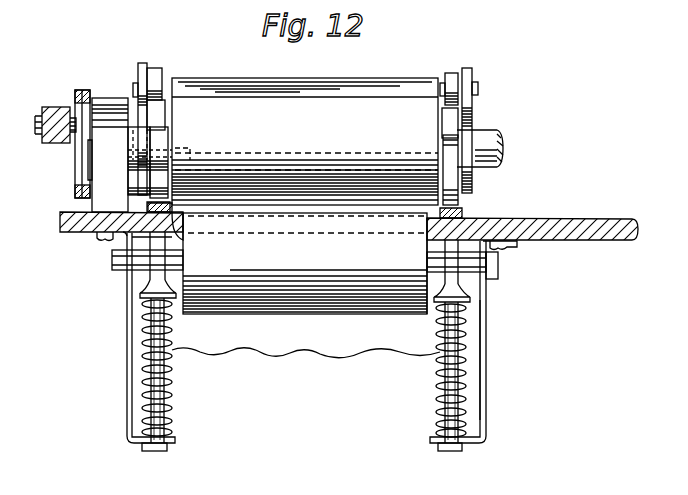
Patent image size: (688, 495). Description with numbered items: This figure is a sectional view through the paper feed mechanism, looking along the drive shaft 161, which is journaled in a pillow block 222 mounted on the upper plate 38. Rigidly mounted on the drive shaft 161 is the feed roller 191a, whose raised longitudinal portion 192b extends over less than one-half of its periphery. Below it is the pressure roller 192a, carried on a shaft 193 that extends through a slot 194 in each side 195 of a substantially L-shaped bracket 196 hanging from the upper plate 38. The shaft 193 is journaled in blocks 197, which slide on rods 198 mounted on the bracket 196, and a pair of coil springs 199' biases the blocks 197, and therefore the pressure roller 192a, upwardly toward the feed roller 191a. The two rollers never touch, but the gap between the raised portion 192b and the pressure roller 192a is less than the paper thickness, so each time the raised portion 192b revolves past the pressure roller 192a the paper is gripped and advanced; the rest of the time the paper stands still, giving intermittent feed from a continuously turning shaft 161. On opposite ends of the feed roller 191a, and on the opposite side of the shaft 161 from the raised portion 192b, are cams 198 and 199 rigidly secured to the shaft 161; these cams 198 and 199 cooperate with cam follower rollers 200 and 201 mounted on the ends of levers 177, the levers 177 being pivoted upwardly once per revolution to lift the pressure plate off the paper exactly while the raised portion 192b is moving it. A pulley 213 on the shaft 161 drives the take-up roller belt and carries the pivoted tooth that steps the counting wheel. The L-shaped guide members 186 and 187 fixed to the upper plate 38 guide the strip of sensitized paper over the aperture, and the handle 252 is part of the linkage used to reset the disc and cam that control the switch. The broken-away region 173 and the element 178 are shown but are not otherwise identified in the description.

The upper plate 38 is at (78, 226).
The drive shaft 161 is at (480, 135).
The frame 173 is at (306, 365).
The levers 177 is at (150, 50).
The gear 178 is at (473, 170).
The L-shaped guide member 186 is at (430, 224).
The L-shaped guide member 187 is at (184, 230).
The feed roller 191a is at (326, 129).
The pressure roller 192a is at (295, 314).
The raised longitudinal portion 192b is at (323, 70).
The shaft 193 is at (498, 262).
The slot 194 is at (130, 276).
The side 195 is at (126, 342).
The L-shaped bracket 196 is at (492, 412).
The block 197 is at (140, 290).
The rod / cam 198 is at (140, 192).
The cam 199 is at (481, 163).
The coil spring 199' is at (339, 370).
The cam follower roller 200 is at (162, 73).
The cam follower roller 201 is at (450, 74).
The pulley 213 is at (80, 152).
The pillow block 222 is at (110, 97).
The handle 252 is at (62, 105).